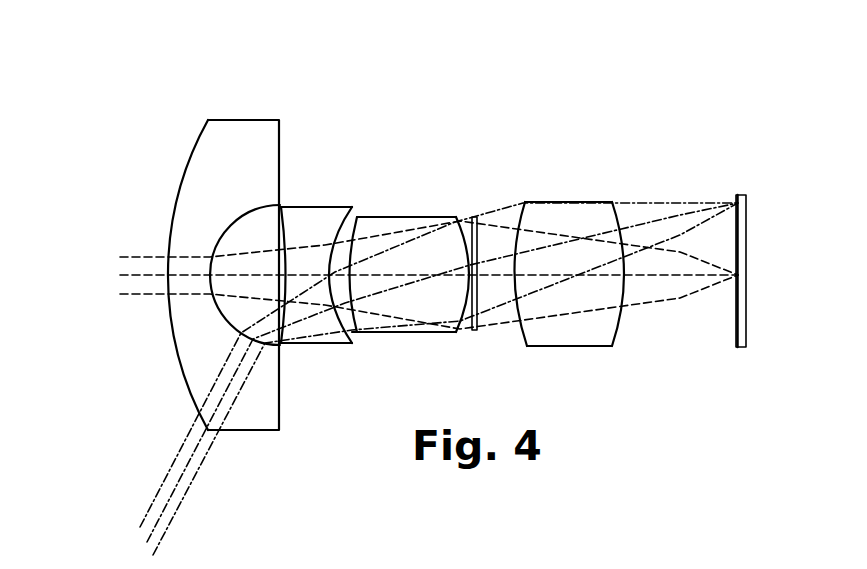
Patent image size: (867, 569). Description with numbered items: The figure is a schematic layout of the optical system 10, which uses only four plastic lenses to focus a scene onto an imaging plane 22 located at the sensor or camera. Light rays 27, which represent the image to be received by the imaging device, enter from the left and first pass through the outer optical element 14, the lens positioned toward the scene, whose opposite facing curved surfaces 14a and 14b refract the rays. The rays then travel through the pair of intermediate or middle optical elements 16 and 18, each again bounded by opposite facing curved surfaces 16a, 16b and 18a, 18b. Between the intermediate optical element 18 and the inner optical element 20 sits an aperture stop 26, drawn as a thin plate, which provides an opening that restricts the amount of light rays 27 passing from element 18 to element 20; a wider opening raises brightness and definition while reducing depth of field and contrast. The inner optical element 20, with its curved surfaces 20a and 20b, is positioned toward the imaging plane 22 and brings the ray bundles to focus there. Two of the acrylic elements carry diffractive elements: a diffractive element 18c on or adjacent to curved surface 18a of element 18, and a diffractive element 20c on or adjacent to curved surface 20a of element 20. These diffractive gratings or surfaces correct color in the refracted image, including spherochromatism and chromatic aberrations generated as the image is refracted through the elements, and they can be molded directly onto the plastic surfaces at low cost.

The optical system 10 is at (432, 78).
The outer optical element 14 is at (234, 132).
The curved surface 14a is at (172, 333).
The curved surface 14b is at (231, 237).
The intermediate optical element 16 is at (321, 210).
The curved surface 16a is at (283, 233).
The curved surface 16b is at (354, 214).
The intermediate optical element 18 is at (416, 216).
The curved surface 18a is at (352, 332).
The curved surface 18b is at (468, 225).
The diffractive element 18c is at (358, 213).
The inner optical element 20 is at (572, 348).
The curved surface 20a is at (520, 325).
The curved surface 20b is at (623, 320).
The diffractive element 20c is at (521, 228).
The imaging plane 22 is at (741, 347).
The aperture stop 26 is at (476, 332).
The light rays 27 is at (133, 240).